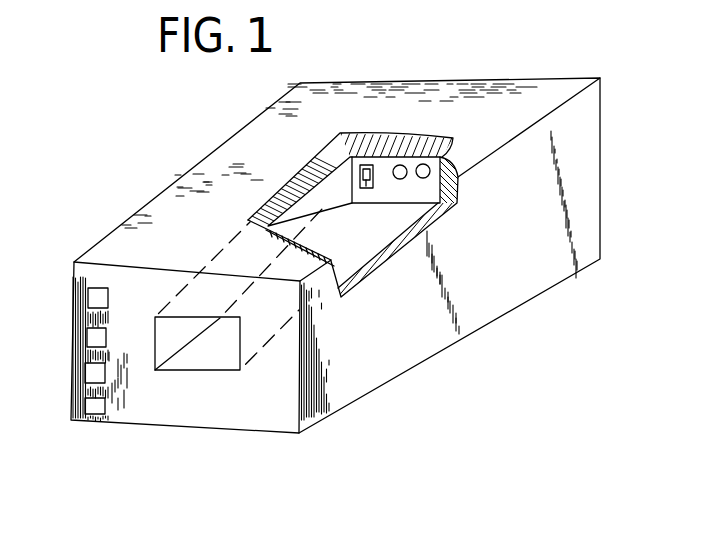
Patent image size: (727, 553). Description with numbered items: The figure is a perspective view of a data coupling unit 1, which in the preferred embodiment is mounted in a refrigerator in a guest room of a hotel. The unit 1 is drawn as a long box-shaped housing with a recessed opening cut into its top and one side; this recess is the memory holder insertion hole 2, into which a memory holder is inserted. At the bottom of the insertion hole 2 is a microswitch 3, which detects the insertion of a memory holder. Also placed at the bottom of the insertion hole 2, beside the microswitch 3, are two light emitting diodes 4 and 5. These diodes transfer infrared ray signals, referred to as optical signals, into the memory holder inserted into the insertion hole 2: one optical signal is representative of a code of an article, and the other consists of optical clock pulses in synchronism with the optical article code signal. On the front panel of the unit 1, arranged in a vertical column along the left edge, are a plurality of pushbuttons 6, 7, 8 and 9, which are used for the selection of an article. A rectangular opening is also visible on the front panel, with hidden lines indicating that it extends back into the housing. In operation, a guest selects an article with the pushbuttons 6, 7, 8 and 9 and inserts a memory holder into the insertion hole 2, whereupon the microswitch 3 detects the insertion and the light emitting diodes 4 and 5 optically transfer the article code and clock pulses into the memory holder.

The data coupling unit 1 is at (212, 170).
The memory holder insertion hole 2 is at (205, 355).
The microswitch 3 is at (375, 178).
The light emitting diode 4 is at (424, 164).
The light emitting diode 5 is at (402, 165).
The pushbutton 6 is at (92, 297).
The pushbutton 7 is at (95, 337).
The pushbutton 8 is at (92, 375).
The pushbutton 9 is at (92, 409).